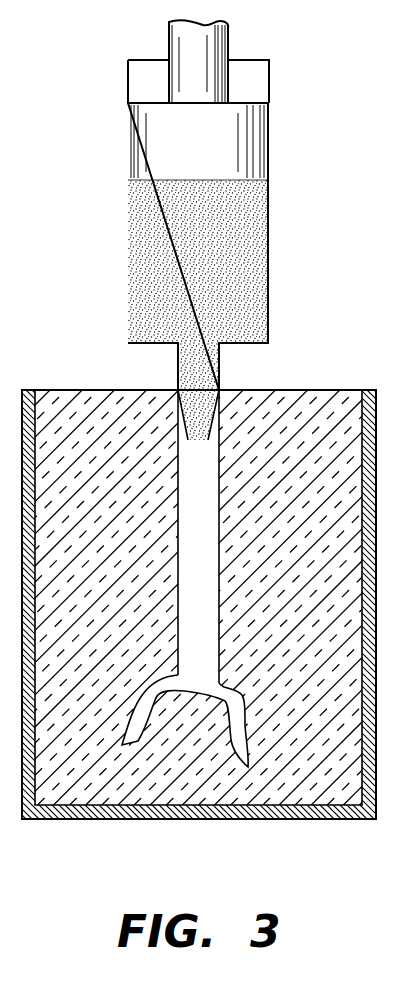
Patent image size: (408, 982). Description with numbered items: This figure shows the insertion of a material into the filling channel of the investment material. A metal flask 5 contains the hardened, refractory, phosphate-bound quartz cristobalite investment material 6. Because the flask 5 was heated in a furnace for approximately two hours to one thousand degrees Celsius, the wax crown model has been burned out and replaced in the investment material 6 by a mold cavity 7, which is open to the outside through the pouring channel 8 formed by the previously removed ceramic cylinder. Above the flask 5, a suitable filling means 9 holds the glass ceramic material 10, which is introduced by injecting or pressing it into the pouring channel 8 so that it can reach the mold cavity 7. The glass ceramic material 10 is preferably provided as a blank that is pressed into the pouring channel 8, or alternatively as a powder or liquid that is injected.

The metal flask 5 is at (287, 808).
The investment material 6 is at (192, 785).
The mold cavity 7 is at (128, 722).
The pouring channel 8 is at (219, 458).
The filling means 9 is at (128, 257).
The glass ceramic material 10 is at (255, 253).